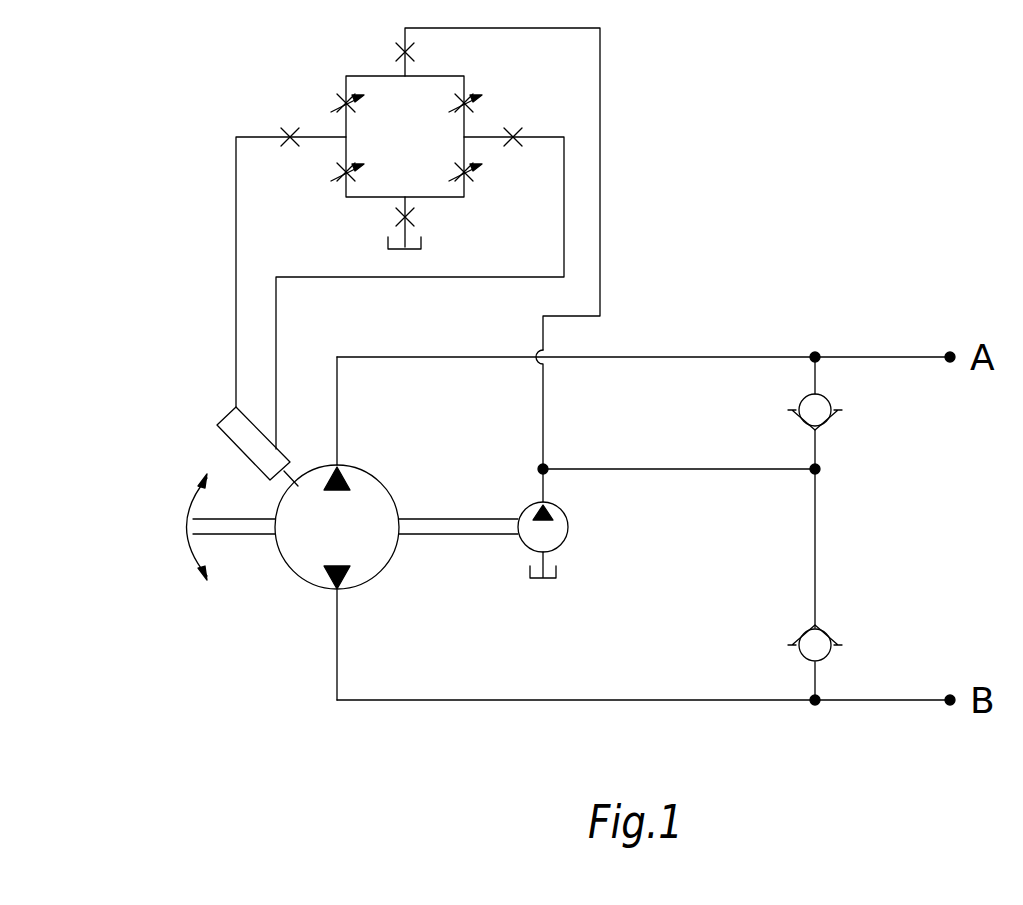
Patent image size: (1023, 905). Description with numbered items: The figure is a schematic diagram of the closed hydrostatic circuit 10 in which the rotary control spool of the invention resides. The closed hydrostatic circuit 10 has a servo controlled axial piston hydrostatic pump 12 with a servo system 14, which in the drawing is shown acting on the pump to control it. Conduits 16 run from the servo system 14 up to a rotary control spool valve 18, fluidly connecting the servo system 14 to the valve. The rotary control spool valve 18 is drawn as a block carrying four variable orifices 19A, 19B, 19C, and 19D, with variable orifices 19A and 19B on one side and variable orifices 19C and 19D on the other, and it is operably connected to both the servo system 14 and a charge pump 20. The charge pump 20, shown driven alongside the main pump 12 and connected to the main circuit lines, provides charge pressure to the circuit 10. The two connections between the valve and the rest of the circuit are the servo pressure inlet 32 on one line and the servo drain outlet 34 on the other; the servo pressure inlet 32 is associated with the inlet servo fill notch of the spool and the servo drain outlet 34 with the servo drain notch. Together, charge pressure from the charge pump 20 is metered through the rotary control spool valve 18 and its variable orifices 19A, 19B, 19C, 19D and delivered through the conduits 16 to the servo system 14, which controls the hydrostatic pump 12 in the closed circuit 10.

The closed hydrostatic circuit 10 is at (218, 127).
The servo controlled axial piston hydrostatic pump 12 is at (293, 572).
The servo system 14 is at (226, 414).
The conduits 16 is at (236, 231).
The rotary control spool valve 18 is at (400, 141).
The variable orifice 19A is at (345, 100).
The variable orifice 19B is at (345, 174).
The variable orifice 19C is at (466, 98).
The variable orifice 19D is at (464, 176).
The charge pump 20 is at (568, 520).
The servo pressure inlet 32 is at (290, 146).
The servo drain outlet 34 is at (514, 130).